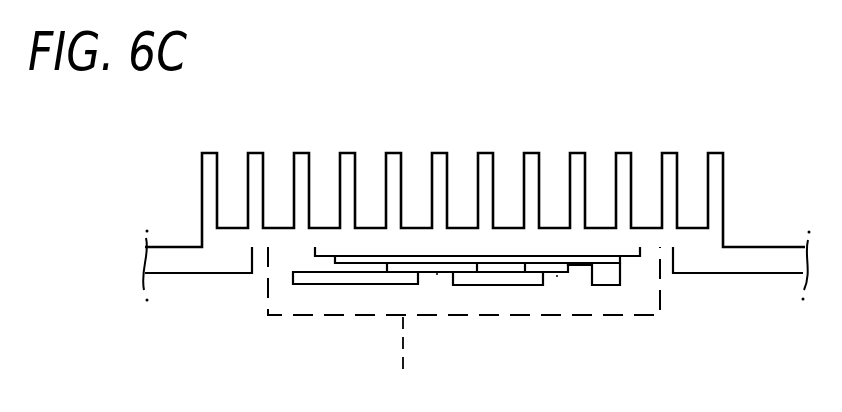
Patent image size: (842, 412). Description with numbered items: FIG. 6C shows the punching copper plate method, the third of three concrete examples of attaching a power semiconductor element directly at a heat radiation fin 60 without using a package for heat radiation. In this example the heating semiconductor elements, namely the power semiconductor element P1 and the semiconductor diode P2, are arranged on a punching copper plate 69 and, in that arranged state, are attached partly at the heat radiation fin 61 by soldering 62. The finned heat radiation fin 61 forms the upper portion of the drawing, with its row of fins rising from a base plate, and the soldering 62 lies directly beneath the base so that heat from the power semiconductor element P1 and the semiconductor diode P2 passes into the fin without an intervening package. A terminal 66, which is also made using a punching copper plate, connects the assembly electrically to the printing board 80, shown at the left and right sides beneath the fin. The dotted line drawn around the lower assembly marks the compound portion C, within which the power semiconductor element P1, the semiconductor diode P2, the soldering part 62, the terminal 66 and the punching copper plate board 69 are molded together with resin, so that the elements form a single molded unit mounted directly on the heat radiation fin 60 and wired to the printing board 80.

The heat radiation fin 60 is at (648, 129).
The heat radiation fin 61 is at (202, 172).
The soldering 62 is at (550, 253).
The terminal 66 is at (345, 285).
The punching copper plate 69 is at (608, 286).
The printing board 80 is at (205, 260).
The power semiconductor element P1 is at (437, 275).
The semiconductor diode P2 is at (557, 277).
The compound portion C is at (401, 360).